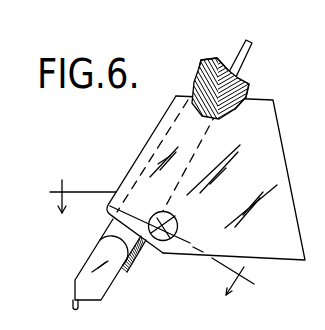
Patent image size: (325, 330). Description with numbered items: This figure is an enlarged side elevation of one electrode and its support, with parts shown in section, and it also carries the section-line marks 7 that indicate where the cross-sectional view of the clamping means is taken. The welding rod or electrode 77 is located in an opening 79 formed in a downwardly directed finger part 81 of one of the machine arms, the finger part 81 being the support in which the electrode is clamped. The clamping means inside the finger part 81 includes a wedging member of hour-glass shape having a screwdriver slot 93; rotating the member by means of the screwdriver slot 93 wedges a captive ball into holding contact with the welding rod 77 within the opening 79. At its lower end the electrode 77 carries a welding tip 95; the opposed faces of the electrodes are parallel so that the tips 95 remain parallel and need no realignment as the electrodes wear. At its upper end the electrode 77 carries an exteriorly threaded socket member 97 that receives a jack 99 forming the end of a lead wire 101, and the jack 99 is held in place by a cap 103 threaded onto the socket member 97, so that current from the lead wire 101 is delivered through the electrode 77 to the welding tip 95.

The section line 7- 7 is at (148, 246).
The welding rod 77 is at (89, 261).
The opening 79 is at (145, 156).
The finger part 81 is at (157, 128).
The screwdriver slot 93 is at (169, 241).
The welding tip 95 is at (72, 302).
The socket member 97 is at (197, 84).
The jack 99 is at (247, 82).
The lead wire 101 is at (240, 51).
The cap 103 is at (208, 62).